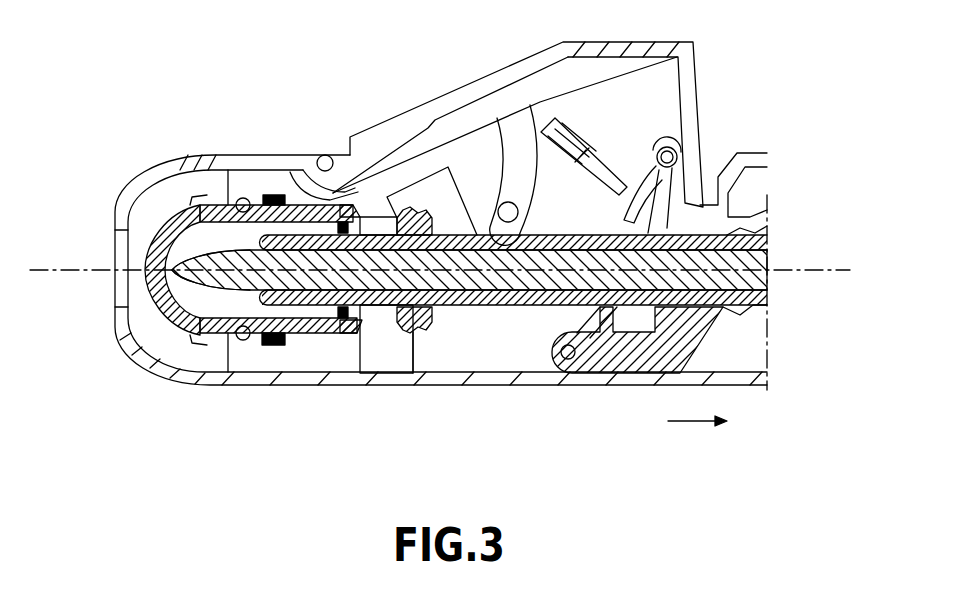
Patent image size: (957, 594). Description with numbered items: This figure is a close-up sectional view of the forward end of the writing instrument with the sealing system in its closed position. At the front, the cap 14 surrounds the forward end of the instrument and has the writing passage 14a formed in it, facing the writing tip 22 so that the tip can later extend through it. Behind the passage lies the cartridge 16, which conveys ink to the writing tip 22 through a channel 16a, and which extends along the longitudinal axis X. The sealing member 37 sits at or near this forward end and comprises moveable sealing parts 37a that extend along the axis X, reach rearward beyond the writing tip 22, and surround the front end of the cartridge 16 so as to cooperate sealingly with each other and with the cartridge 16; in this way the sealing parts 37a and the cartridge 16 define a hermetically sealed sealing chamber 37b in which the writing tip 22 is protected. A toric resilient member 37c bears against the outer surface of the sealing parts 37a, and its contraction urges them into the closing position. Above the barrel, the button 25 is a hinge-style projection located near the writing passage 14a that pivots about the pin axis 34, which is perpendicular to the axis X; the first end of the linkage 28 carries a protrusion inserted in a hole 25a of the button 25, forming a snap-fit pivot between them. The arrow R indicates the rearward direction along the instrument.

The cap 14 is at (128, 190).
The writing passage 14a is at (115, 272).
The cartridge 16 is at (740, 228).
The channel 16a is at (510, 277).
The writing tip 22 is at (217, 283).
The button 25 is at (560, 43).
The hole 25a is at (673, 143).
The linkage 28 is at (657, 152).
The pin axis 34 is at (328, 155).
The sealing member 37 is at (154, 249).
The sealing parts 37a is at (182, 232).
The sealing chamber 37b is at (223, 220).
The resilient member 37c is at (247, 198).
The axis X is at (837, 270).
The direction R is at (697, 438).